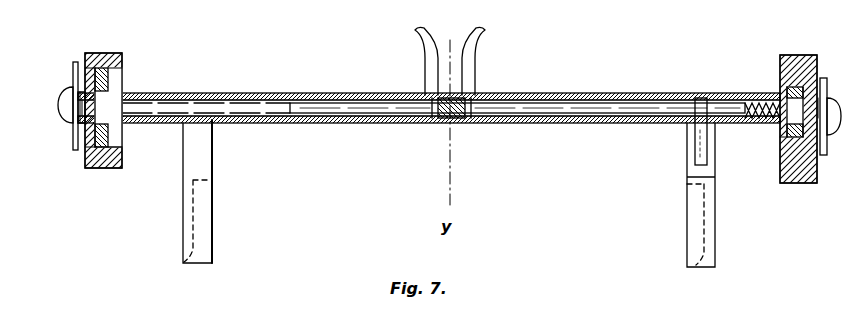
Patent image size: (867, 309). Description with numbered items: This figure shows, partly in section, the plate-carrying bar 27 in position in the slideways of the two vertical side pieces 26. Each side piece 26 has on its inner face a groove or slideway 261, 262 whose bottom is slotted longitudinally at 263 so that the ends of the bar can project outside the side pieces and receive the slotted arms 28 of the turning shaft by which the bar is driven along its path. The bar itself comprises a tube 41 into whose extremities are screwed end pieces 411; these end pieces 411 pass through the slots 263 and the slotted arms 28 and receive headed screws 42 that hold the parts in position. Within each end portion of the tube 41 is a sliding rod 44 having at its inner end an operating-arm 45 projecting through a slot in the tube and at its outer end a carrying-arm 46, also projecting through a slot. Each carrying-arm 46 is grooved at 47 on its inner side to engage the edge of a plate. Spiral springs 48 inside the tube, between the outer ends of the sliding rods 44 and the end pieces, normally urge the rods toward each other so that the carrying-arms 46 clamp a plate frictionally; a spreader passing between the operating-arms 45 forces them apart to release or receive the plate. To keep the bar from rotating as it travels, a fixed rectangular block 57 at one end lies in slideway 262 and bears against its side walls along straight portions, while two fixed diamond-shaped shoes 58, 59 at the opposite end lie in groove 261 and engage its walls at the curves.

The side pieces 26 is at (115, 53).
The plate-carrying bar 27 is at (472, 126).
The slotted arms 28 is at (75, 143).
The tube 41 is at (377, 123).
The headed screws 42 is at (67, 127).
The sliding rod 44 is at (307, 103).
The operating-arm 45 is at (425, 60).
The carrying-arm 46 is at (212, 172).
The groove 47 is at (195, 232).
The spiral springs 48 is at (760, 100).
The rectangular block 57 is at (791, 184).
The diamond-shaped shoe 58 is at (117, 140).
The diamond-shaped shoe 59 is at (120, 83).
The groove or slideway 261 is at (108, 168).
The groove or slideway 262 is at (785, 133).
The slot 263 is at (88, 170).
The end pieces 411 is at (80, 88).